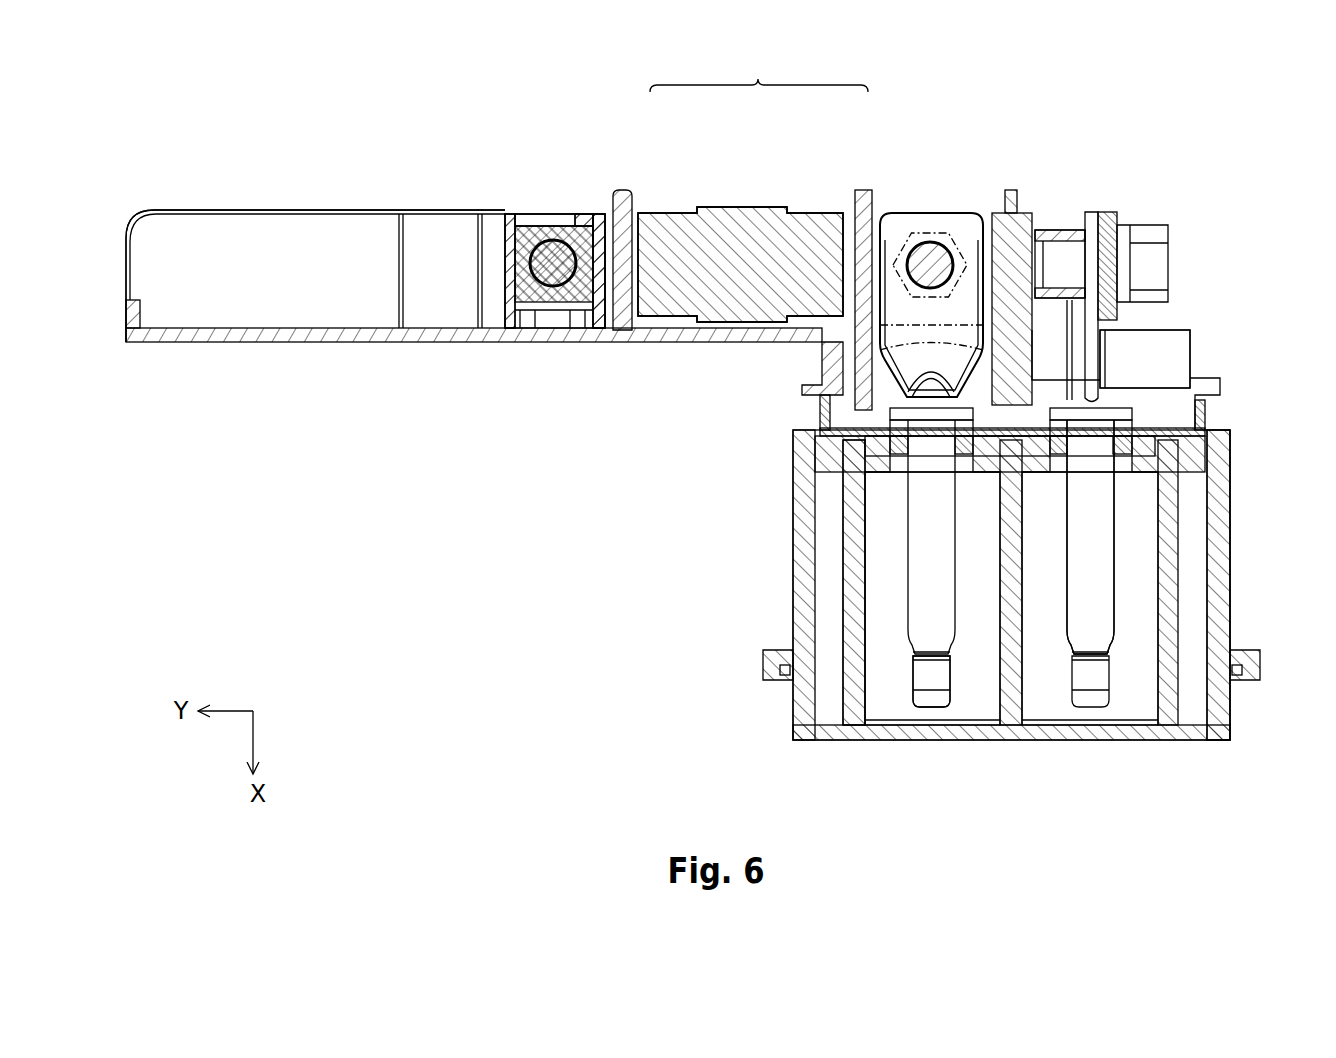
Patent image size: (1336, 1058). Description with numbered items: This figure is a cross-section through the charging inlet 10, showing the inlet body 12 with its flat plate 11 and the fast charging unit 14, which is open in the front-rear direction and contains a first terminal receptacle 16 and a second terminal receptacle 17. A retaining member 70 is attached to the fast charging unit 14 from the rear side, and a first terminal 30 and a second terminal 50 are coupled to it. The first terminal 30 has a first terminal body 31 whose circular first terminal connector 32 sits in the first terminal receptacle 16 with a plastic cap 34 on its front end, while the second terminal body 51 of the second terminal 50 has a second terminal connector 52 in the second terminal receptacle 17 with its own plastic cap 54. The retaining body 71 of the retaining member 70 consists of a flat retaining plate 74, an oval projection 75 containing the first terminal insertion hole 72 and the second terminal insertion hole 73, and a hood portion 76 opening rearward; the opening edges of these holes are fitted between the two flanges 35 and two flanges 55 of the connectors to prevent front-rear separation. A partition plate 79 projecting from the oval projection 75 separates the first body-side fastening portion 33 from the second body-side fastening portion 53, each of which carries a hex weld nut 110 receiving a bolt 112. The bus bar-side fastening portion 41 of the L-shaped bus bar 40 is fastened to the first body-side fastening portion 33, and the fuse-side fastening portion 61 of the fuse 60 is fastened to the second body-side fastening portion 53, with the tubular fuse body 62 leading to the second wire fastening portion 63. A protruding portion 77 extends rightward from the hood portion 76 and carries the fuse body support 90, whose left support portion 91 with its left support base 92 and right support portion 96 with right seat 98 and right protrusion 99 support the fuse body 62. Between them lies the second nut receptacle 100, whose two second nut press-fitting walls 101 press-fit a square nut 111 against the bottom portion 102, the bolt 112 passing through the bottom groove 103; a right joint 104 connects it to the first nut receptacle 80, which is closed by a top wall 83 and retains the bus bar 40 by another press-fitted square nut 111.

The charging inlet 10 is at (1173, 130).
The flat plate 11 is at (775, 660).
The inlet body 12 is at (1011, 625).
The fast charging unit 14 is at (1012, 752).
The first terminal receptacle 16 is at (1127, 708).
The second terminal receptacle 17 is at (885, 708).
The first terminal 30 is at (1125, 655).
The first terminal body 31 is at (1127, 557).
The first terminal connector 32 is at (1095, 578).
The first body-side fastening portion 33 is at (962, 340).
The plastic cap 34 is at (1090, 676).
The flanges 35 is at (1100, 446).
The bus bar 40 is at (1128, 278).
The bus bar-side fastening portion 41 is at (1106, 270).
The second terminal 50 is at (890, 655).
The second terminal body 51 is at (900, 531).
The second terminal connector 52 is at (930, 578).
The second body-side fastening portion 53 is at (1203, 408).
The plastic cap 54 is at (935, 676).
The flanges 55 is at (950, 450).
The fuse 60 is at (752, 197).
The fuse-side fastening portion 61 is at (976, 245).
The fuse body 62 is at (735, 290).
The second wire fastening portion 63 is at (545, 305).
The retaining member 70 is at (310, 155).
The retaining body 71 is at (815, 365).
The first terminal insertion hole 72 is at (1075, 445).
The second terminal insertion hole 73 is at (900, 468).
The retaining plate 74 is at (1207, 390).
The oval projection 75 is at (1200, 420).
The hood portion 76 is at (1195, 338).
The protruding portion 77 is at (636, 335).
The partition plate 79 is at (1013, 240).
The first nut receptacle 80 is at (315, 237).
The top wall 83 is at (424, 238).
The fuse body support 90 is at (759, 73).
The left support portion 91 is at (836, 251).
The left support base 92 is at (862, 260).
The right support portion 96 is at (740, 207).
The right seat 98 is at (685, 210).
The right protrusion 99 is at (622, 215).
The second nut receptacle 100 is at (525, 310).
The second nut press-fitting walls 101 is at (500, 318).
The bottom portion 102 is at (588, 210).
The bottom groove 103 is at (572, 210).
The right joint 104 is at (487, 238).
The hex weld nut 110 is at (1055, 235).
The square nut 111 is at (603, 212).
The bolt 112 is at (550, 268).